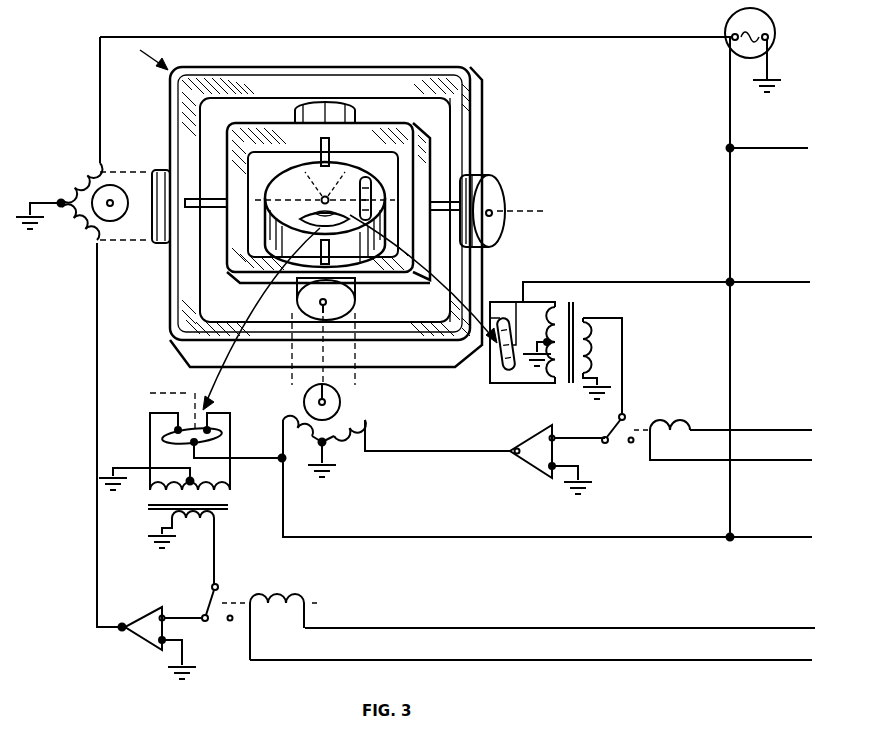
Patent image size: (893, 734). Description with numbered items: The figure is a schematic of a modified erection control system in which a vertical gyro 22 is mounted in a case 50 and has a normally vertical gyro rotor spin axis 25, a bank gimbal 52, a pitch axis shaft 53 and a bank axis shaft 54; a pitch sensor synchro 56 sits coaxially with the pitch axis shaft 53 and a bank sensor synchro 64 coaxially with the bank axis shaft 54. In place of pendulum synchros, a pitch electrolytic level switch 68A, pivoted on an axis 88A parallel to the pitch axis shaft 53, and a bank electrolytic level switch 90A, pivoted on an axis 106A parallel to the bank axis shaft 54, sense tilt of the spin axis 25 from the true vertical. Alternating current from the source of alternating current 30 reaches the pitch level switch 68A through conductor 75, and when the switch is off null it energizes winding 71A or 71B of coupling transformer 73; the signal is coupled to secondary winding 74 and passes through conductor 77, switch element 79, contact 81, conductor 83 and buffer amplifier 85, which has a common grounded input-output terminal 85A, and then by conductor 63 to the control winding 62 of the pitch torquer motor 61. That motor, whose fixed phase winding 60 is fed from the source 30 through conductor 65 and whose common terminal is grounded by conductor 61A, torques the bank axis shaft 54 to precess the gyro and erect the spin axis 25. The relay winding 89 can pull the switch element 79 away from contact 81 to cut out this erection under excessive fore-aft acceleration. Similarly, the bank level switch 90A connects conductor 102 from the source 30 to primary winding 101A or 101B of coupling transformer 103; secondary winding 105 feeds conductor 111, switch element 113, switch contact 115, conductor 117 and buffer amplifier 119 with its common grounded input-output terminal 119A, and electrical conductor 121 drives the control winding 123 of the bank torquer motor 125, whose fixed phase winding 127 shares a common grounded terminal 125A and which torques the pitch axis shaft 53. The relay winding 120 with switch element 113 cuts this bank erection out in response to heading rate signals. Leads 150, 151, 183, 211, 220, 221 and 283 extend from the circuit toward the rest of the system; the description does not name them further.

The vertical gyro 22 is at (141, 56).
The gyro rotor spin axis 25 is at (321, 197).
The source of alternating current 30 is at (726, 26).
The case 50 is at (480, 102).
The bank gimbal 52 is at (416, 128).
The pitch axis shaft 53 is at (331, 150).
The bank axis shaft 54 is at (211, 198).
The pitch sensor synchro 56 is at (356, 112).
The fixed phase winding 60 is at (84, 170).
The pitch torquer motor 61 is at (118, 190).
The conductor 61A is at (41, 200).
The control winding 62 is at (80, 226).
The conductor 63 is at (96, 348).
The bank sensor synchro 64 is at (497, 190).
The conductor 65 is at (100, 62).
The pitch electrolytic level switch 68A is at (305, 214).
The secondary winding 71A is at (150, 490).
The secondary winding 71B is at (230, 498).
The coupling transformer 73 is at (143, 511).
The secondary winding 74 is at (190, 528).
The conductor 75 is at (732, 243).
The conductor 77 is at (216, 552).
The switch element 79 is at (218, 590).
The contact 81 is at (208, 626).
The conductor 83 is at (186, 614).
The buffer amplifier 85 is at (138, 640).
The common grounded input-output terminal 85A is at (176, 666).
The axis 88A is at (305, 170).
The electromagnetic relay winding 89 is at (280, 606).
The bank electrolytic level switch 90A is at (505, 316).
The primary winding 101A is at (545, 372).
The primary winding 101B is at (547, 310).
The electrical conductor 102 is at (640, 280).
The coupling transformer 103 is at (574, 302).
The secondary winding 105 is at (598, 354).
The axis 106A is at (484, 378).
The conductor 111 is at (624, 340).
The switch element 113 is at (611, 424).
The switch contact 115 is at (626, 448).
The conductor 117 is at (572, 438).
The buffer amplifier 119 is at (518, 462).
The common grounded input-output terminal 119A is at (565, 472).
The relay winding 120 is at (672, 420).
The electrical conductor 121 is at (430, 449).
The control winding 123 is at (366, 424).
The bank torquer motor 125 is at (356, 306).
The common grounded terminal 125A is at (332, 462).
The fixed phase winding 127 is at (286, 434).
The output conductor 150 is at (763, 628).
The output conductor 151 is at (760, 663).
The conductor 183 is at (765, 284).
The conductor 211 is at (758, 540).
The conductor 220 is at (765, 428).
The conductor 221 is at (765, 463).
The conductor 283 is at (765, 150).